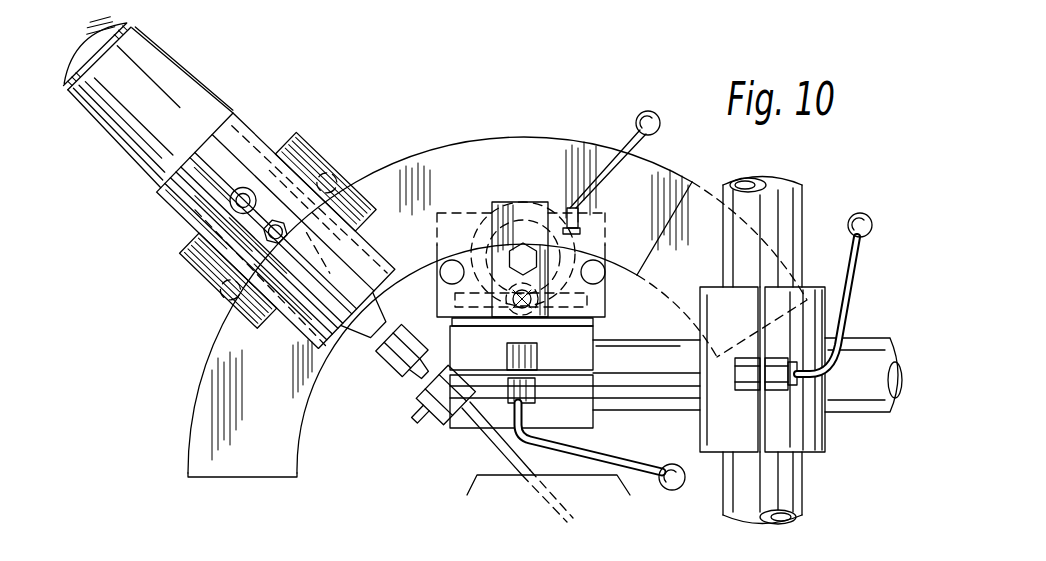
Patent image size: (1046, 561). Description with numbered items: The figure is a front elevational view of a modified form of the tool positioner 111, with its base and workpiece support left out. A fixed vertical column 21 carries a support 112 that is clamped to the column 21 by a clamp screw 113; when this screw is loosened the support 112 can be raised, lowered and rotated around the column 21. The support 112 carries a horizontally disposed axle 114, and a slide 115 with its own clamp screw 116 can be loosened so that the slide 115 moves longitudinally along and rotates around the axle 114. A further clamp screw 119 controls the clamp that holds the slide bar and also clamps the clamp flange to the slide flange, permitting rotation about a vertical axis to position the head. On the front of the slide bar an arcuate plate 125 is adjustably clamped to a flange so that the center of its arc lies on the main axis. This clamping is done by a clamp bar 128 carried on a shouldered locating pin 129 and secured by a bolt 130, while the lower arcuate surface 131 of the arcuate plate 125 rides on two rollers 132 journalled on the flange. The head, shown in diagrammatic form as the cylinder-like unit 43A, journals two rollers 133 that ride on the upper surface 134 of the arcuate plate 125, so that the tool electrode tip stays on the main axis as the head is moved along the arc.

The cylinder assembly 43A is at (247, 122).
The rollers 133 is at (331, 170).
The arcuate plate 125 is at (422, 152).
The lower arcuate surface 131 is at (307, 418).
The upper surface 134 is at (192, 423).
The clamp bar 128 is at (498, 213).
The bolt 130 is at (511, 246).
The rollers 132 is at (442, 262).
The shouldered locating pin 129 is at (528, 310).
The clamp screw 119 is at (638, 128).
The slide 115 is at (583, 400).
The clamp screw 116 is at (597, 447).
The tool positioner 111 is at (782, 349).
The column 21 is at (803, 203).
The support 112 is at (818, 428).
The clamp screw 113 is at (853, 266).
The axle 114 is at (850, 337).